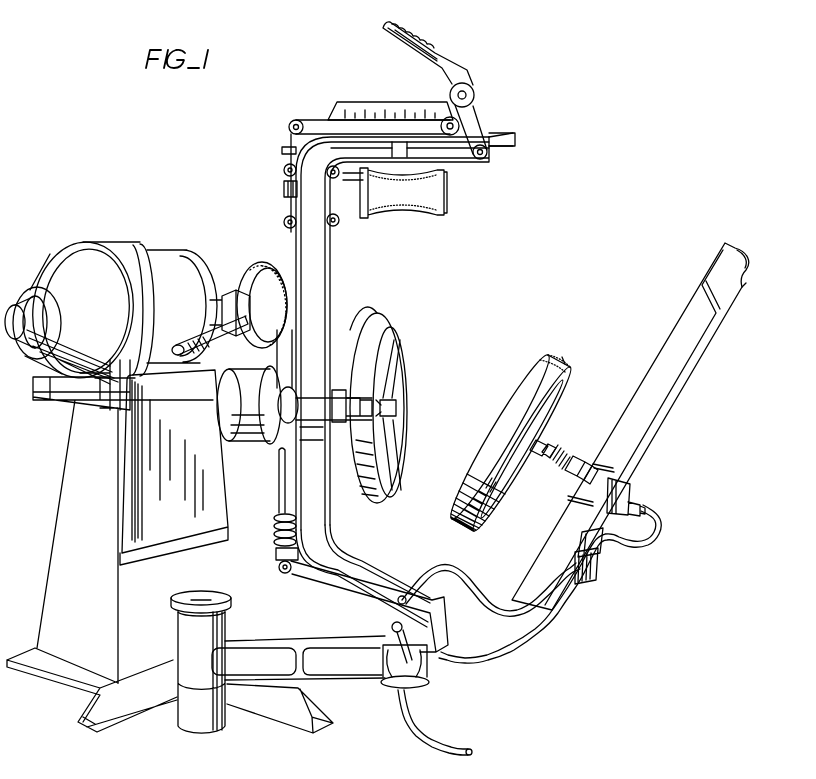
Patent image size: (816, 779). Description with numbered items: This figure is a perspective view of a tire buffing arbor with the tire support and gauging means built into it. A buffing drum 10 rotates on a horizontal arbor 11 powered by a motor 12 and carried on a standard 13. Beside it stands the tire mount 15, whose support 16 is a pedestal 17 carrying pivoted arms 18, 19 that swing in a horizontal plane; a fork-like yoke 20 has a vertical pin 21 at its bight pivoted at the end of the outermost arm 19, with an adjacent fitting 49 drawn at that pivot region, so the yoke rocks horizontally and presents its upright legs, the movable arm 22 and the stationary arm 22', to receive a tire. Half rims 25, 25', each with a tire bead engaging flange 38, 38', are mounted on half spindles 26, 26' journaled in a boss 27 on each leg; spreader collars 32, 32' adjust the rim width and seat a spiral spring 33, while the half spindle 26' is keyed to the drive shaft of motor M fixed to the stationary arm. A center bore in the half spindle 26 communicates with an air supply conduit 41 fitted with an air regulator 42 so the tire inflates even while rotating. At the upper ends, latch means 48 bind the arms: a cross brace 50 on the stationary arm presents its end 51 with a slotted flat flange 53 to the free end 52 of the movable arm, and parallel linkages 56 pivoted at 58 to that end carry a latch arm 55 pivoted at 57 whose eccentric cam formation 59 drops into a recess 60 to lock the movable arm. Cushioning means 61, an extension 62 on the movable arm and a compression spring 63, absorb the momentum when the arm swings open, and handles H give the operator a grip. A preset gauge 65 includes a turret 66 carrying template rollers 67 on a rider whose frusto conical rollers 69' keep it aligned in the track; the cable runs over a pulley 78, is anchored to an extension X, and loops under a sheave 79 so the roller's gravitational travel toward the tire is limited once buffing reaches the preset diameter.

The buffing drum 10 is at (247, 278).
The horizontal arbor 11 is at (233, 285).
The motor 12 is at (60, 287).
The standard 13 is at (70, 443).
The tire mount 15 is at (384, 700).
The support 16 is at (171, 655).
The pedestal 17 is at (122, 708).
The pivoted arm 18 is at (238, 617).
The pivoted arm 19 is at (318, 673).
The yoke 20 is at (318, 614).
The vertical pin 21 is at (420, 683).
The movable arm 22 is at (575, 429).
The stationary arm 22' is at (392, 382).
The half rim 25 is at (510, 443).
The half rim 25' is at (392, 408).
The half spindle 26 is at (480, 455).
The half spindle 26' is at (410, 410).
The boss 27 is at (331, 352).
The spreader collar 32 is at (574, 455).
The spreader collar 32' is at (352, 376).
The spiral spring 33 is at (550, 440).
The tire bead engaging flange 38 is at (557, 345).
The tire bead engaging flange 38' is at (365, 309).
The air supply conduit 41 is at (653, 538).
The air regulator 42 is at (590, 574).
The latch means 48 is at (466, 70).
The pin 49 is at (390, 642).
The cross brace 50 is at (453, 152).
The end of cross brace 51 is at (512, 135).
The free end of movable arm 52 is at (735, 249).
The flat flange 53 is at (493, 134).
The latch arm 55 is at (443, 68).
The parallel linkages 56 is at (474, 110).
The pivot 57 is at (453, 94).
The pivot connection 58 is at (488, 155).
The cam formation 59 is at (473, 90).
The recess 60 is at (742, 287).
The cushioning means 61 is at (264, 546).
The extension 62 is at (367, 607).
The compression spring 63 is at (275, 530).
The preset gauge 65 is at (390, 101).
The turret 66 is at (358, 207).
The roller 67 is at (398, 224).
The frusto conical rollers 69' is at (298, 200).
The pulley 78 is at (297, 124).
The sheave 79 is at (284, 190).
The handle H is at (180, 348).
The motor M is at (257, 387).
The extension X is at (282, 152).